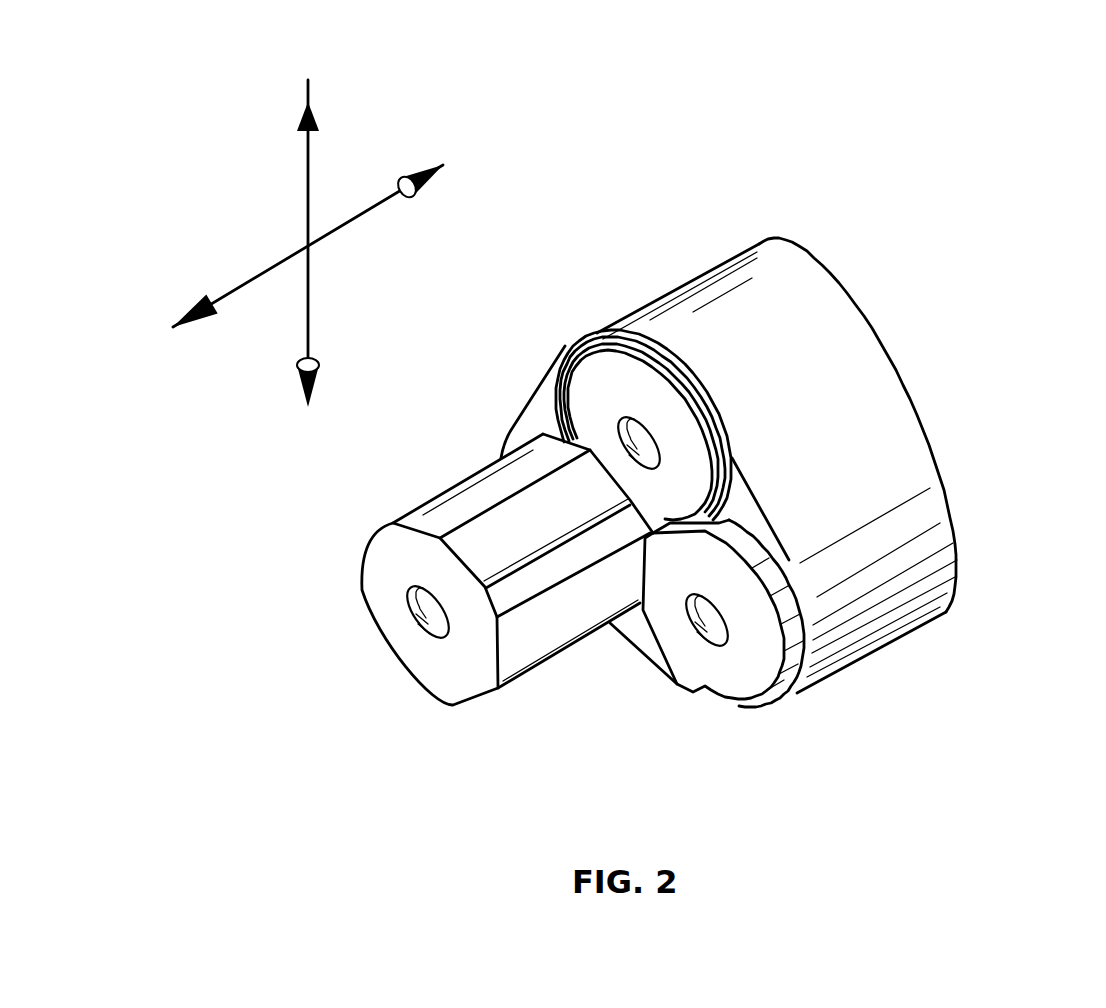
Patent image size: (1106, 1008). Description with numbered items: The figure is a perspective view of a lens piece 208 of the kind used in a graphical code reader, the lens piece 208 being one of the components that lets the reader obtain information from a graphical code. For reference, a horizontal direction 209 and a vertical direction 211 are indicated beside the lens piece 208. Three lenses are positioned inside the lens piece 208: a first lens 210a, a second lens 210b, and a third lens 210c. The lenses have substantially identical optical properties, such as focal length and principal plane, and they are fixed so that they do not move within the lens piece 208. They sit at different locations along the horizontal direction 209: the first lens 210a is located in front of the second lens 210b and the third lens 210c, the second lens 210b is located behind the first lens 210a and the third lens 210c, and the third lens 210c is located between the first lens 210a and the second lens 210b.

The lens piece 208 is at (920, 421).
The horizontal direction 209 is at (357, 222).
The vertical direction 211 is at (312, 307).
The first lens 210a is at (420, 619).
The second lens 210b is at (623, 430).
The third lens 210c is at (707, 627).